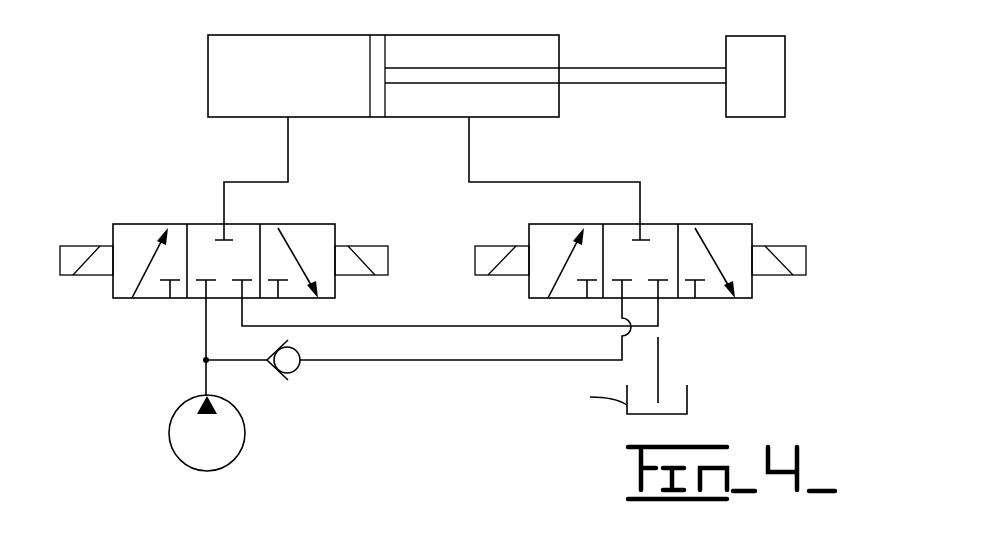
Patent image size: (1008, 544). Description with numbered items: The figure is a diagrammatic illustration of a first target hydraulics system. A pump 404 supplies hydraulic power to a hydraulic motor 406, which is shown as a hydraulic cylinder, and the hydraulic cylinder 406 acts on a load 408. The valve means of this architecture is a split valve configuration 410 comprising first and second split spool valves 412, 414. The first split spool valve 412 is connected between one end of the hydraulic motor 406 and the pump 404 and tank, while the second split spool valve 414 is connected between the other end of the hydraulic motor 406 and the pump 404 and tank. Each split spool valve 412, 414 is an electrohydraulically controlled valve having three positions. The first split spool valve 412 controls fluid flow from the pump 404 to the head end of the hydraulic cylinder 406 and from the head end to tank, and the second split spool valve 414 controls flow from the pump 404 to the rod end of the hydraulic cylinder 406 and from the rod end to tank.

The pump 404 is at (170, 430).
The hydraulic motor 406 is at (250, 35).
The load 408 is at (756, 36).
The split valve configuration 410 is at (826, 262).
The first split spool valve 412 is at (140, 224).
The second split spool valve 414 is at (716, 224).